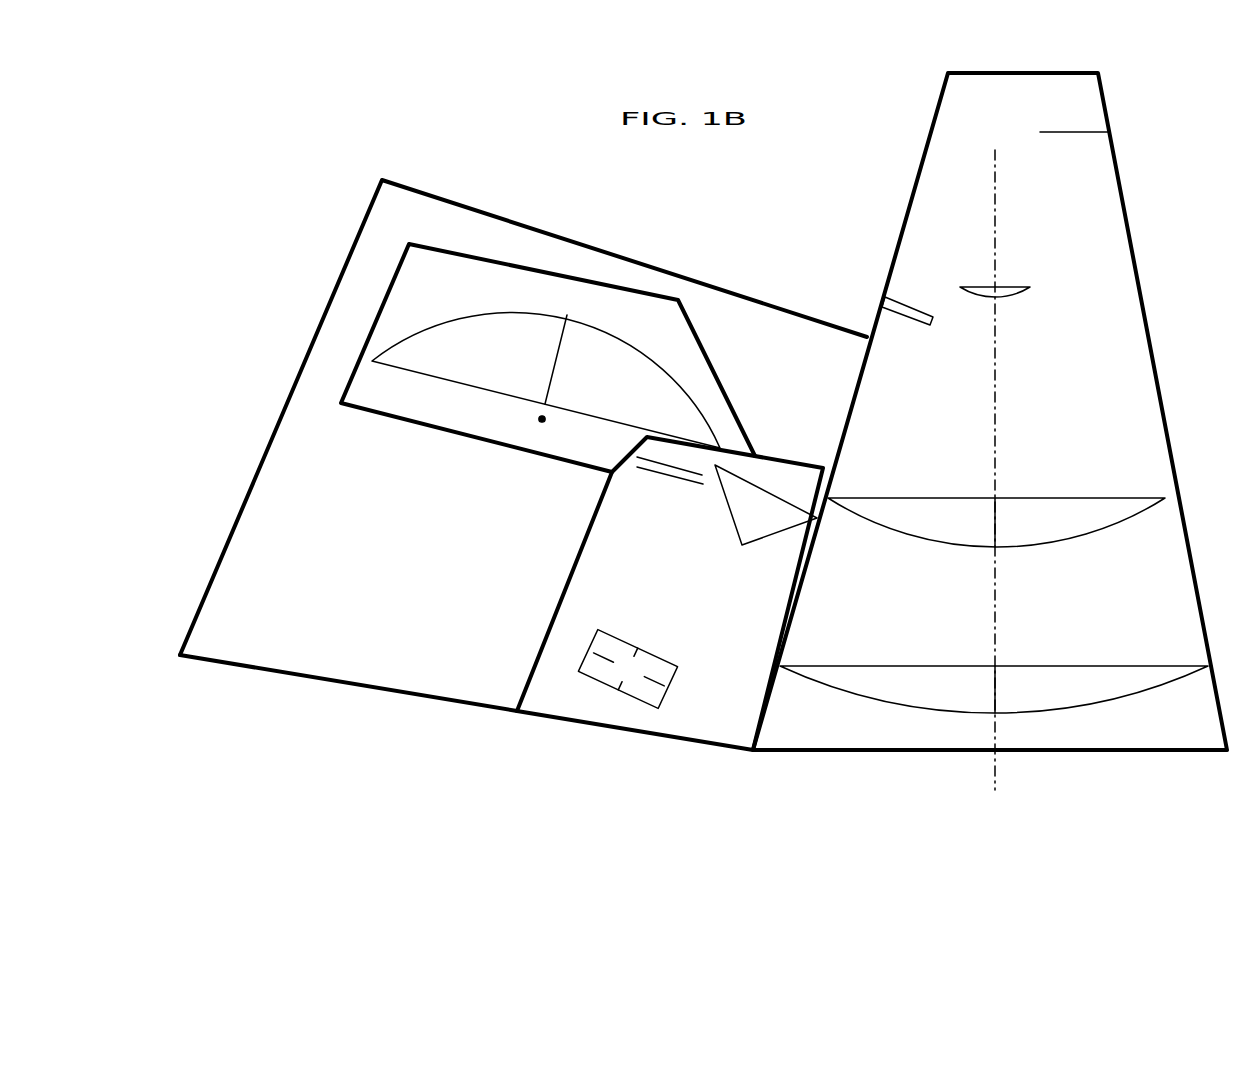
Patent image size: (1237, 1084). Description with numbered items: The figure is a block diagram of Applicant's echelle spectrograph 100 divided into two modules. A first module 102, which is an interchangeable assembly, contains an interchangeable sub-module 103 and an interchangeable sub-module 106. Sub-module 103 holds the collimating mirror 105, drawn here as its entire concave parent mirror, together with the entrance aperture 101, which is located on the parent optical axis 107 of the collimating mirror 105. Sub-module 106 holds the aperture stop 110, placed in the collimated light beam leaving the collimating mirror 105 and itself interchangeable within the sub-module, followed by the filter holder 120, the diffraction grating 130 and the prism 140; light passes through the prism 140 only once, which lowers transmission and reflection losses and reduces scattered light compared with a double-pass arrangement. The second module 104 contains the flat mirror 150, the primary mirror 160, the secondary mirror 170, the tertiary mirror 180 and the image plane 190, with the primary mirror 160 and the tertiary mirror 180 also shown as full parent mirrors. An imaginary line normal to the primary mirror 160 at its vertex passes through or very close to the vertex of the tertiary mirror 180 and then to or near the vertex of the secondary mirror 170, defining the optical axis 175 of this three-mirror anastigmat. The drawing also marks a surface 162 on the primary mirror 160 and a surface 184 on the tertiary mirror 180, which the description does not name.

The echelle spectrograph 100 is at (767, 835).
The entrance aperture 101 is at (542, 419).
The first module 102 is at (467, 717).
The interchangeable sub-module 103 is at (500, 445).
The second module 104 is at (975, 777).
The collimating mirror 105 is at (533, 345).
The interchangeable sub-module 106 is at (732, 717).
The parent optical axis 107 is at (558, 360).
The aperture stop 110 is at (697, 483).
The filter holder 120 is at (667, 475).
The diffraction grating 130 is at (642, 680).
The prism 140 is at (771, 515).
The flat mirror 150 is at (900, 322).
The primary mirror 160 is at (1058, 720).
The lens surface 162 is at (905, 703).
The secondary mirror 170 is at (1007, 303).
The optical axis 175 is at (993, 602).
The tertiary mirror 180 is at (943, 547).
The lens surface 184 is at (1055, 542).
The image plane 190 is at (1078, 138).